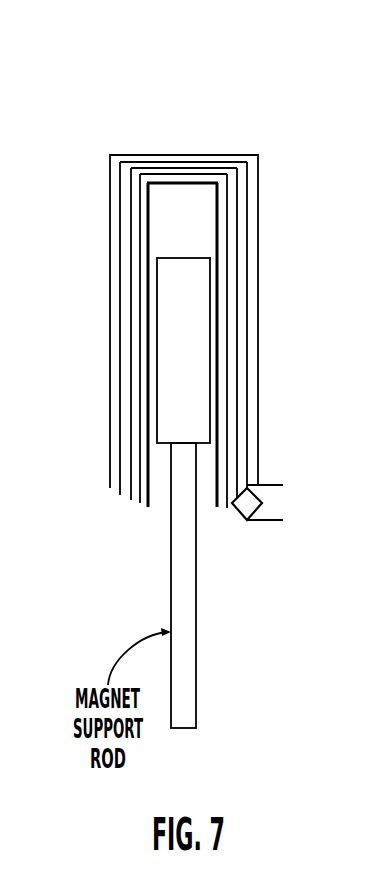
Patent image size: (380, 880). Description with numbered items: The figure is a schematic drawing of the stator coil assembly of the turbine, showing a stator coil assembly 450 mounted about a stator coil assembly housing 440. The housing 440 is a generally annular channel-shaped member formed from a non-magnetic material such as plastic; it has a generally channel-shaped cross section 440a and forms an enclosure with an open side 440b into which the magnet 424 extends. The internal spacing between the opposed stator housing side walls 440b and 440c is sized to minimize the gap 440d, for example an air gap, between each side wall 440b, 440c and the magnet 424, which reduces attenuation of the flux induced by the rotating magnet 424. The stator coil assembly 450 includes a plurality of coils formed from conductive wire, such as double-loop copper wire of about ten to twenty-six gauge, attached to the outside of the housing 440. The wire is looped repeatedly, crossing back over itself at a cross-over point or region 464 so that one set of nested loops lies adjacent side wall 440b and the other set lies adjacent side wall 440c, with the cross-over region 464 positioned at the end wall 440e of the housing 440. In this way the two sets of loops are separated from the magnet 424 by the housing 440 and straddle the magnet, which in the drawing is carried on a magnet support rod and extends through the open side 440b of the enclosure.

The cross-over point or region 464 is at (188, 155).
The stator coil assembly housing 440 is at (200, 327).
The channel-shaped cross section 440a is at (178, 183).
The open side / stator housing side wall 440b is at (160, 487).
The stator housing side wall 440c is at (148, 328).
The gap 440d is at (217, 465).
The end wall 440e is at (153, 183).
The magnet 424 is at (175, 409).
The stator coil assembly 450 is at (262, 383).